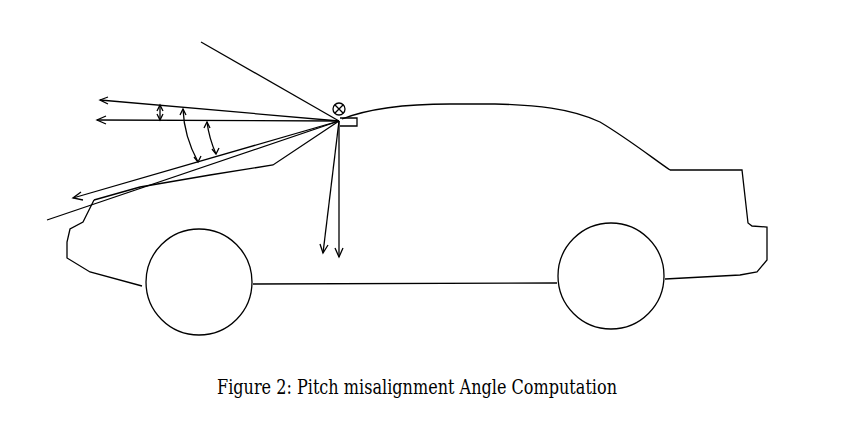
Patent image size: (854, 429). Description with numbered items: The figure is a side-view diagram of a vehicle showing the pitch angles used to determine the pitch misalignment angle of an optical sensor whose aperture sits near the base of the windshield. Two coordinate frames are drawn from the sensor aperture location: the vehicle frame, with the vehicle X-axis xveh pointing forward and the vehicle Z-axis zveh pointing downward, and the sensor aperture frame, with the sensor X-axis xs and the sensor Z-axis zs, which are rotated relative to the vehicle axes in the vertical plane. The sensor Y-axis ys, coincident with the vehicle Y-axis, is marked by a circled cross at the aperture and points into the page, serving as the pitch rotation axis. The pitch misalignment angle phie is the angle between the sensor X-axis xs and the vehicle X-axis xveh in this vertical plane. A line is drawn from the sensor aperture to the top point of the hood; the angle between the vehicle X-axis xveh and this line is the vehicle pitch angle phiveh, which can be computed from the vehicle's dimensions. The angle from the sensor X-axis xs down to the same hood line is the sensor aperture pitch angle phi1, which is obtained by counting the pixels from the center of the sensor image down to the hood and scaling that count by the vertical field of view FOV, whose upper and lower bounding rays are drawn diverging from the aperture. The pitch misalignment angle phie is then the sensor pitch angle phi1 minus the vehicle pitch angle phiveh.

The sensor aperture X-axis xs is at (219, 102).
The vehicle X-axis xveh is at (218, 130).
The sensor aperture Z-axis zs is at (322, 192).
The vehicle Z-axis zveh is at (353, 193).
The sensor aperture Y-axis ys is at (337, 102).
The vertical field of view FOV is at (185, 140).
The pitch misalignment angle phie is at (147, 112).
The sensor aperture pitch angle phi1 is at (180, 135).
The vehicle pitch angle to hood phiveh is at (222, 138).